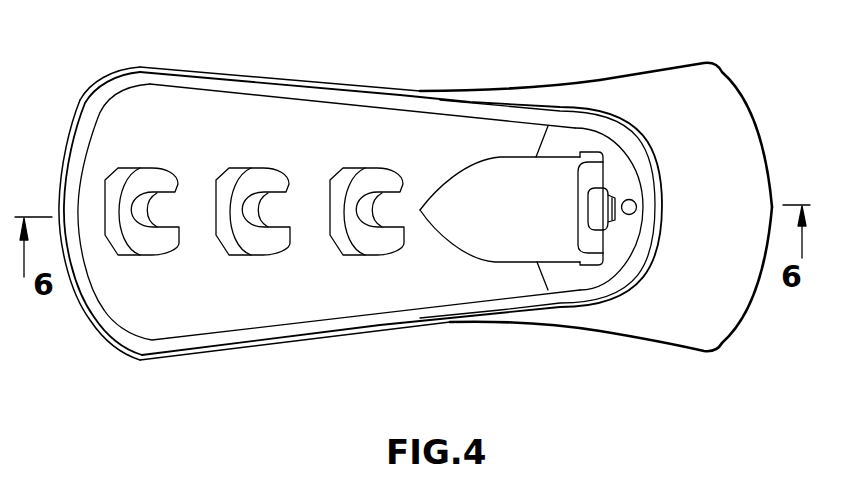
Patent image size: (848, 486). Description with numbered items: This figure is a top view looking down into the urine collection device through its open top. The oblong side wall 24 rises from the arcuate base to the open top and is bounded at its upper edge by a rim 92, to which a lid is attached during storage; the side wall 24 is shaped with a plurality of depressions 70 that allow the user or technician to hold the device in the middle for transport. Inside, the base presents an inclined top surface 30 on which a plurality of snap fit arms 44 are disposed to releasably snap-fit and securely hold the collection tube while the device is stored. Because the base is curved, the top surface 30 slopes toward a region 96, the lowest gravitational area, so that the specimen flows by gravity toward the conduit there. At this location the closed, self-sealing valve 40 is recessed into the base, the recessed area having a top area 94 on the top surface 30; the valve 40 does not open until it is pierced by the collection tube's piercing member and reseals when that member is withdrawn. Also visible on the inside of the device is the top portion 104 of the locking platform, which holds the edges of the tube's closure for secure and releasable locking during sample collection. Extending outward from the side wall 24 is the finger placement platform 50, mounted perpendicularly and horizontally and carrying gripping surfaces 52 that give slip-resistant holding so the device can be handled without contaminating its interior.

The side wall 24 is at (266, 79).
The top surface 30 is at (355, 140).
The valve 40 is at (600, 202).
The snap fit arms 44 is at (127, 250).
The finger placement platform 50 is at (755, 123).
The gripping surfaces 52 is at (703, 115).
The depressions 70 is at (391, 91).
The rim 92 is at (141, 67).
The top area 94 is at (540, 188).
The region 96 is at (571, 136).
The top portion 104 is at (637, 206).